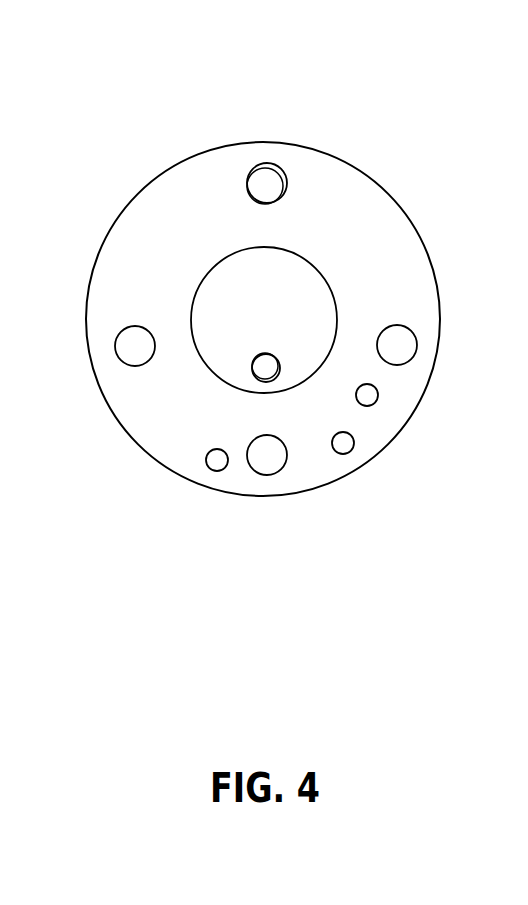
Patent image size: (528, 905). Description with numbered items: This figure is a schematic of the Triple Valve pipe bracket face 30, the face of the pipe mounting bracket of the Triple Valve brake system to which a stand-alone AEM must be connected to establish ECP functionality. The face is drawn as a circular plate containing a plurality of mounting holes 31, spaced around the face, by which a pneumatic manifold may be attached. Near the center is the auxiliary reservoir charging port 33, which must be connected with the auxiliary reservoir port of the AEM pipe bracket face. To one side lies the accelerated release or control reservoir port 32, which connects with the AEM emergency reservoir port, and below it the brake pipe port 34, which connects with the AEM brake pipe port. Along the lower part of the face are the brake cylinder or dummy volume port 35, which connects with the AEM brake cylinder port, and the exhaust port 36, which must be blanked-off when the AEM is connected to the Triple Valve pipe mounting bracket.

The pipe bracket face 30 is at (394, 120).
The mounting holes 31 is at (265, 163).
The accelerated release or control reservoir port 32 is at (378, 391).
The auxiliary reservoir charging port 33 is at (268, 353).
The brake pipe port 34 is at (345, 454).
The brake cylinder or dummy volume port 35 is at (261, 474).
The exhaust port 36 is at (207, 462).